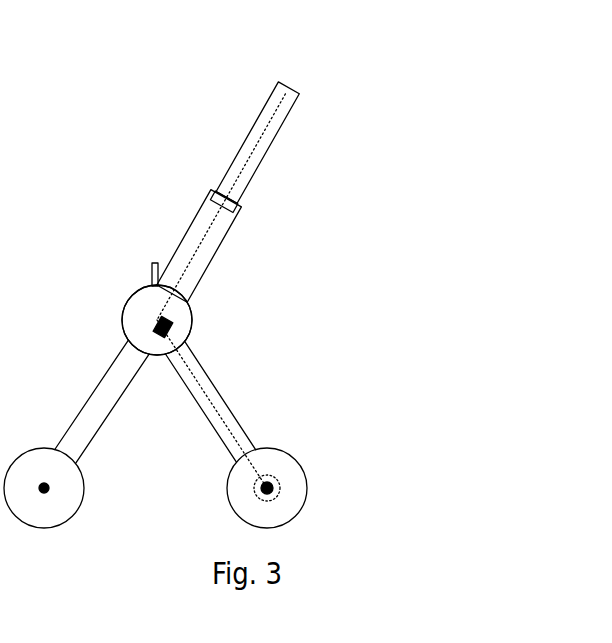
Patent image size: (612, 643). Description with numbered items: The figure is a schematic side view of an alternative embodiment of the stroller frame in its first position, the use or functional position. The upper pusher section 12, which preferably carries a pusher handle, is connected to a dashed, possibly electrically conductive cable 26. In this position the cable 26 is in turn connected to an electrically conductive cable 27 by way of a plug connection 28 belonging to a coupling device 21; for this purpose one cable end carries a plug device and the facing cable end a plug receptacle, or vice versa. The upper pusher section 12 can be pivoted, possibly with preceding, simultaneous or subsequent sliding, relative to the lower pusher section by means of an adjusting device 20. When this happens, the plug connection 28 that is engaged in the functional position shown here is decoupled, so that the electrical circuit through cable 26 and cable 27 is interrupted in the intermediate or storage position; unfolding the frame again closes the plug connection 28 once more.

The upper pusher section 12 is at (237, 163).
The cable 26 is at (265, 127).
The adjusting device 20 is at (204, 324).
The coupling device 21 is at (111, 299).
The plug connection 28 is at (143, 325).
The cable 27 is at (218, 410).